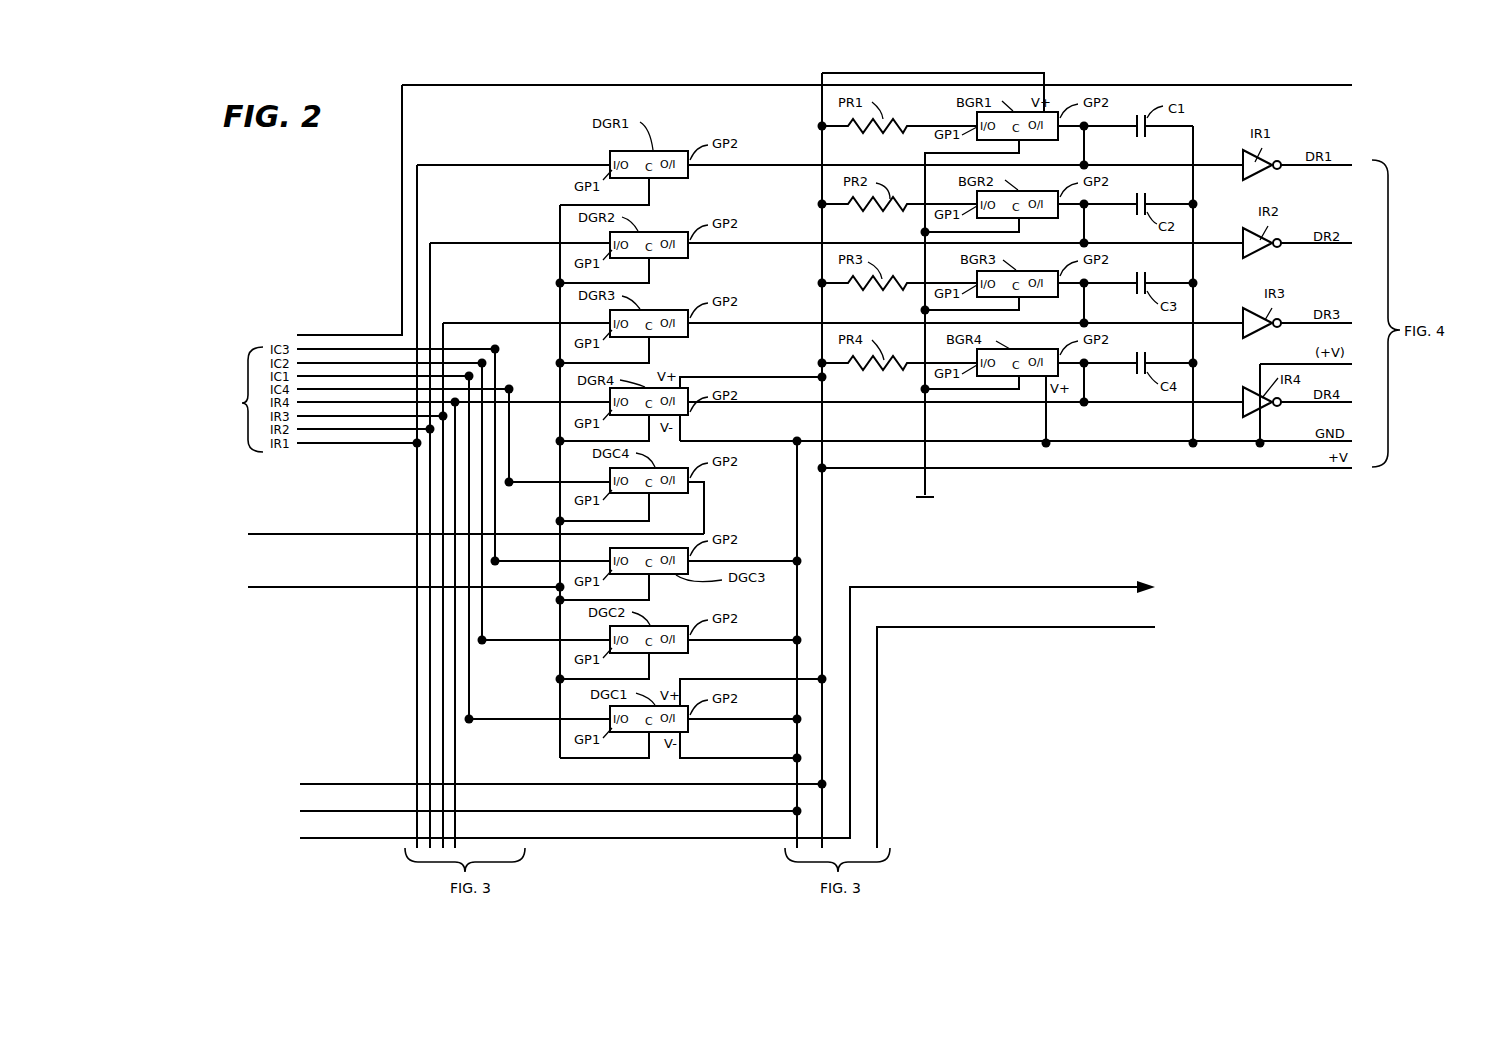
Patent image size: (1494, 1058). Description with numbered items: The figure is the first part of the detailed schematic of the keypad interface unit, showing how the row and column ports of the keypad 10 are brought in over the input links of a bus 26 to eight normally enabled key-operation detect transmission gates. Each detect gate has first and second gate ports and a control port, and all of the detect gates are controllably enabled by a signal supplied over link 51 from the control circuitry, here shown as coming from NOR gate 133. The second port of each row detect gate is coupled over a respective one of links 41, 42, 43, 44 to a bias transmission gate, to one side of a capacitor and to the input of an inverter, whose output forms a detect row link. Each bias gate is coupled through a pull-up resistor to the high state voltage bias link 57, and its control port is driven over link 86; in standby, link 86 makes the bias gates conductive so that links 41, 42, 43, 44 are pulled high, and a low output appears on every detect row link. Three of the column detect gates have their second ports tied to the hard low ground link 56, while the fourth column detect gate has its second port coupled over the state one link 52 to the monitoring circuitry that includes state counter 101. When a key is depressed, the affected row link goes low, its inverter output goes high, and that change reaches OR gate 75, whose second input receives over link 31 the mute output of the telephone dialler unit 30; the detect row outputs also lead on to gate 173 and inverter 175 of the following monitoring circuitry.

The keypad scan bus lines 26 is at (346, 335).
The keypad 10 is at (220, 399).
The link 41 is at (901, 165).
The link 42 is at (903, 243).
The link 43 is at (899, 323).
The link 44 is at (864, 401).
The link 51 is at (330, 587).
The state 1 link 52 is at (322, 534).
The state counter 101 is at (441, 523).
The NOR gate 133 is at (364, 595).
The low voltage link 56 is at (370, 811).
The high state voltage bias link 57 is at (350, 784).
The link 31 is at (809, 715).
The OR gate 75 is at (346, 838).
The inverter 175 is at (1084, 735).
The telephone dialler unit 30 is at (266, 831).
The link 86 is at (925, 481).
The gate 173 is at (1424, 90).